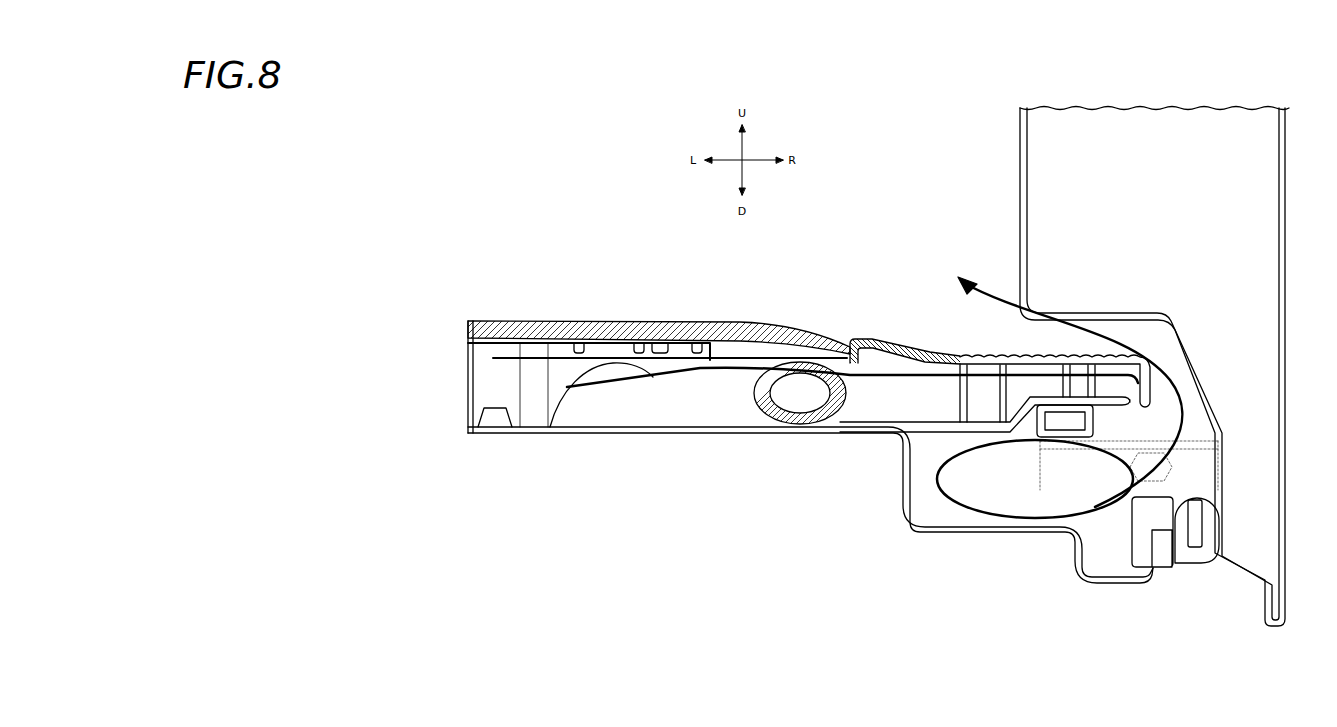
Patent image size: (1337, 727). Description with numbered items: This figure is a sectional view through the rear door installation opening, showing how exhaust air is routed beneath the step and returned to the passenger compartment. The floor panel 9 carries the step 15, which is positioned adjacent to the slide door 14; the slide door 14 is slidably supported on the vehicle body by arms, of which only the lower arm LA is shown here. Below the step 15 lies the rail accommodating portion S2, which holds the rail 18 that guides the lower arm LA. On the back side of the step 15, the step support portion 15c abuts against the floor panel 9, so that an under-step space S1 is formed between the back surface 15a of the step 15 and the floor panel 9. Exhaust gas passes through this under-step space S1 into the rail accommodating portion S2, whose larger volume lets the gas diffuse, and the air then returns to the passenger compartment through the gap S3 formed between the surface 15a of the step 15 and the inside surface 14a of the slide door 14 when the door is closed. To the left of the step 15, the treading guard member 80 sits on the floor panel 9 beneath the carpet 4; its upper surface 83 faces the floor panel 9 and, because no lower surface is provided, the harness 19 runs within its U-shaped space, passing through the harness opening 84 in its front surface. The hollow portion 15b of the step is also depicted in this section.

The carpet 4 is at (661, 320).
The floor panel 9 is at (710, 434).
The slide door 14 is at (1287, 229).
The inside surface of the slide door 14a is at (1183, 343).
The step 15 is at (975, 378).
The back surface of the step 15a is at (920, 388).
The hollow portion of seal 15b is at (920, 346).
The step support portion 15c is at (1080, 360).
The rail 18 is at (1095, 418).
The harness 19 is at (652, 403).
The treading guard member 80 is at (468, 365).
The upper surface of the treading guard member 83 is at (572, 327).
The harness opening 84 is at (594, 380).
The under-step space S1 is at (940, 400).
The rail accommodating portion S2 is at (990, 480).
The gap S3 is at (1120, 318).
The lower arm LA is at (1055, 465).